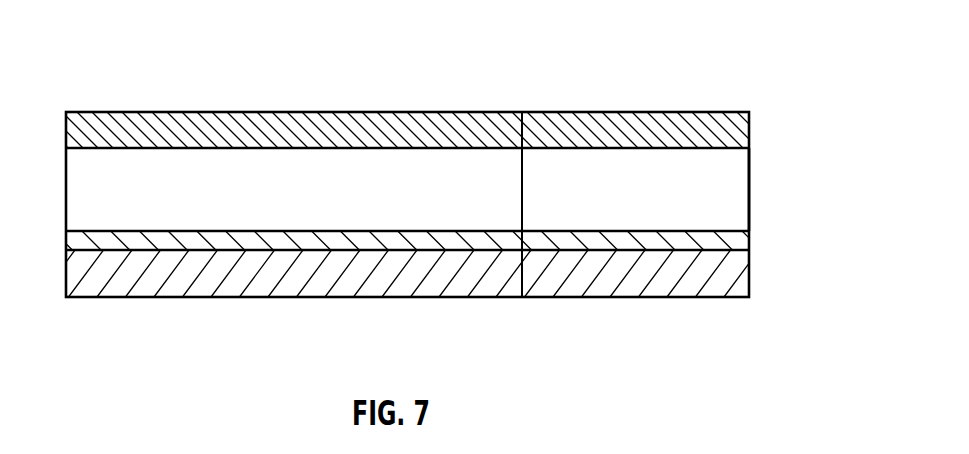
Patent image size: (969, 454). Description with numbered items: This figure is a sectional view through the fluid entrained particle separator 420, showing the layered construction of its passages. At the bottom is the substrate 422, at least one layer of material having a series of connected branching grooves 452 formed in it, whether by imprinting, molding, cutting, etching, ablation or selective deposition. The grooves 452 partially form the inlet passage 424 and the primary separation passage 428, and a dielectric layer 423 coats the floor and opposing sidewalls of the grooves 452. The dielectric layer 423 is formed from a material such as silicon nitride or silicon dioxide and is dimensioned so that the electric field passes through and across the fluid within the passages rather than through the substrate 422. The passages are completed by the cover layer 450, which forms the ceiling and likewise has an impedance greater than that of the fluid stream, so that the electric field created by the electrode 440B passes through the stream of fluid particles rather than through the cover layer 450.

The fluid entrained particle separator 420 is at (449, 217).
The substrate 422 is at (309, 298).
The dielectric layer 423 is at (749, 238).
The inlet passage 424 is at (450, 258).
The primary separation passage 428 is at (618, 260).
The electrode 440B is at (624, 172).
The cover layer 450 is at (398, 122).
The grooves 452 is at (749, 181).